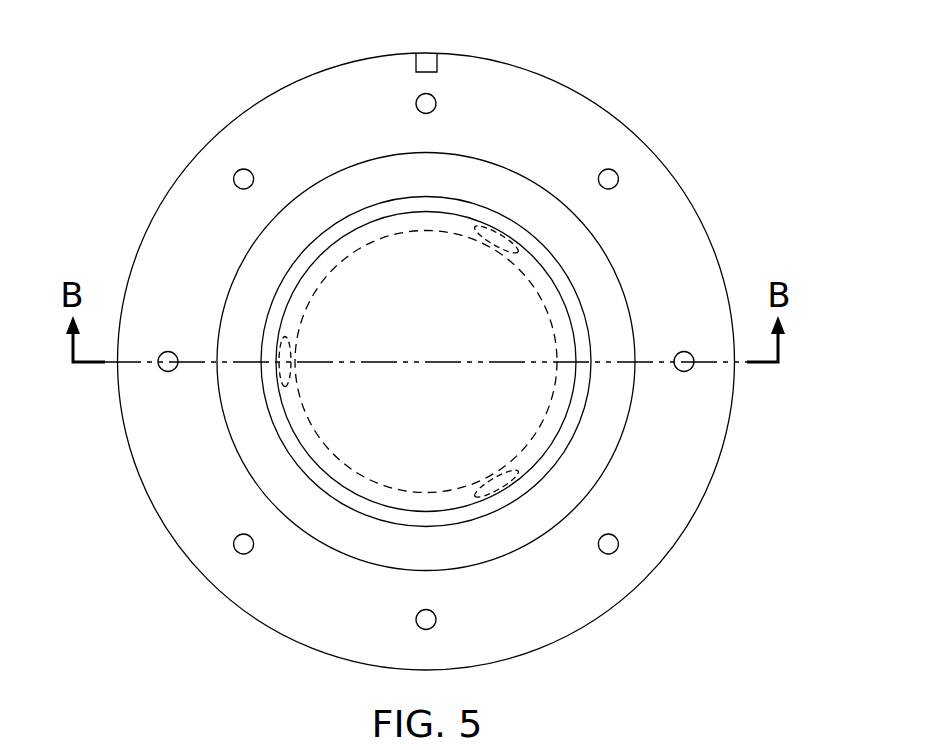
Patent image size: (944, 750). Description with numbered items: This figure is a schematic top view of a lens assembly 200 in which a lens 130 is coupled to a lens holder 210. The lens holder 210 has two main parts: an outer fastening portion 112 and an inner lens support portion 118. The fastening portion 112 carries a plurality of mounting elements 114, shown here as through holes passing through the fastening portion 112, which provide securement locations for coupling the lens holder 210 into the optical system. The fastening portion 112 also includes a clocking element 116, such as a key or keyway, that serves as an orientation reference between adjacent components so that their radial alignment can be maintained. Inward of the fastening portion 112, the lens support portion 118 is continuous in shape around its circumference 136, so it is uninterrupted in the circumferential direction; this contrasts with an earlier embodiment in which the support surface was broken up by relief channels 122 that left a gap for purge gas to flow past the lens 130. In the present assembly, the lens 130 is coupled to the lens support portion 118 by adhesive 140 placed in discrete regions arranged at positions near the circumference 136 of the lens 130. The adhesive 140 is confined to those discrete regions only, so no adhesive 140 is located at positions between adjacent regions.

The fastening portion 112 is at (663, 542).
The mounting elements 114 is at (241, 169).
The clocking element 116 is at (427, 53).
The lens support portion 118 is at (599, 458).
The relief channels 122 is at (233, 287).
The lens 130 is at (583, 400).
The circumference 136 is at (373, 492).
The adhesive 140 is at (496, 242).
The lens assembly 200 is at (710, 94).
The lens holder 210 is at (248, 88).